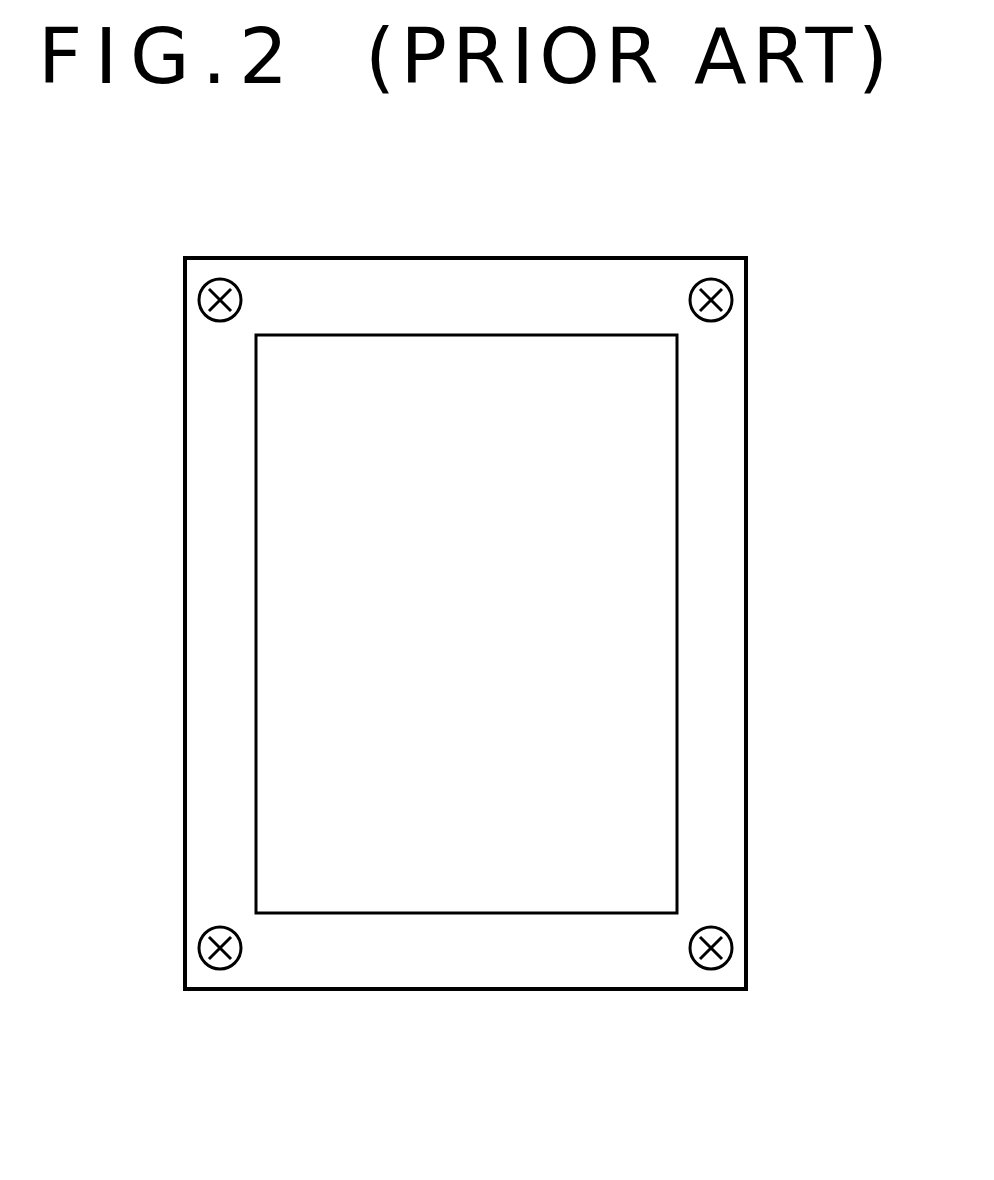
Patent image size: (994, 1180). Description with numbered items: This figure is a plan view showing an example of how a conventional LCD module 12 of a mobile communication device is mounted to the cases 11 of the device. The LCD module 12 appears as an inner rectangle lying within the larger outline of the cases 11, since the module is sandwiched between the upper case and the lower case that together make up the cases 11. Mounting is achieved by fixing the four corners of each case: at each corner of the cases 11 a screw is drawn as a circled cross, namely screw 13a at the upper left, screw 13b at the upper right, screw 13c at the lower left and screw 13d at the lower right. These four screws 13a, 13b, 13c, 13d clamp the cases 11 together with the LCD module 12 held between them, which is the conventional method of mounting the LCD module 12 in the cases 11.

The cases 11 is at (427, 990).
The LCD module 12 is at (256, 640).
The screw 13a is at (199, 299).
The screw 13b is at (732, 299).
The screw 13c is at (199, 947).
The screw 13d is at (732, 947).